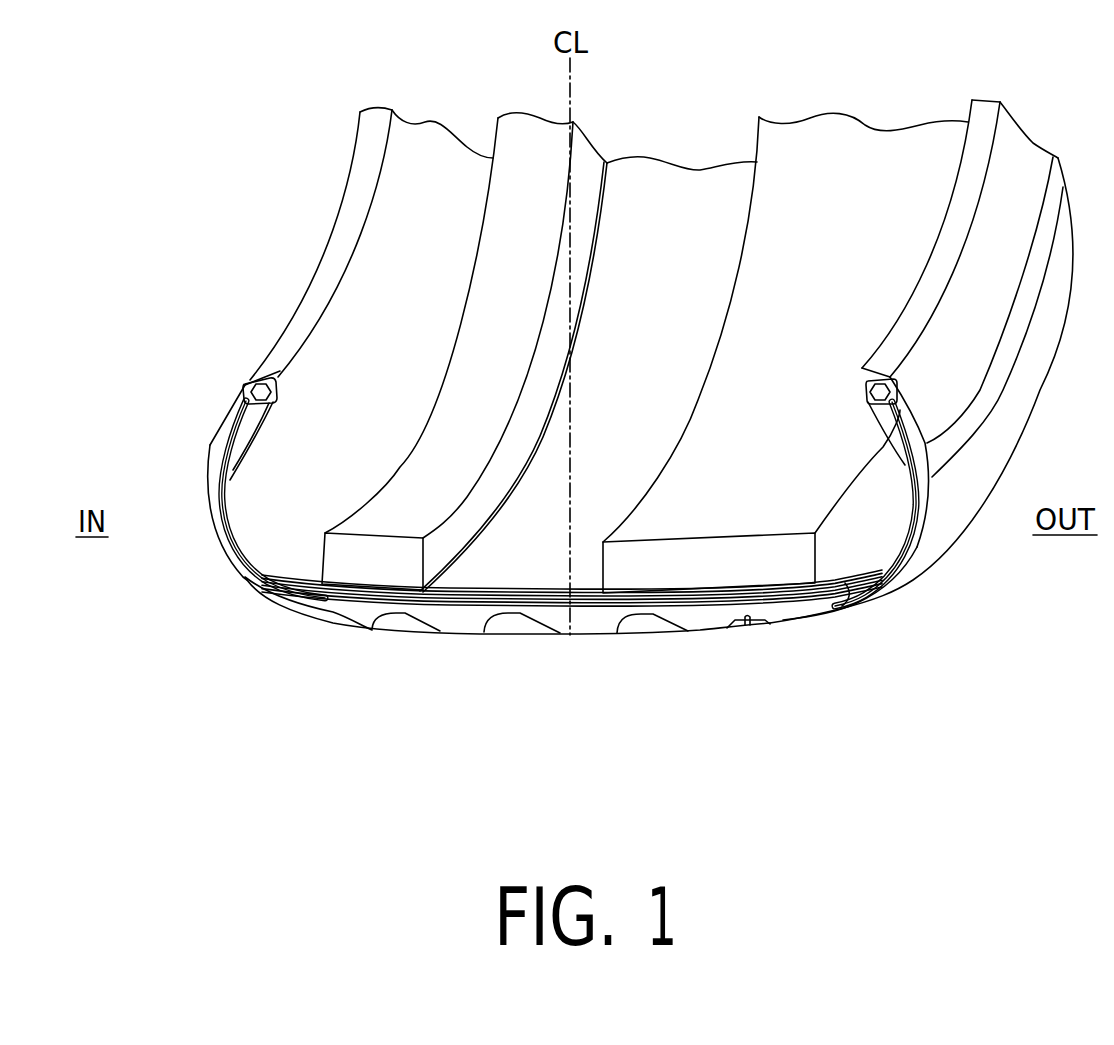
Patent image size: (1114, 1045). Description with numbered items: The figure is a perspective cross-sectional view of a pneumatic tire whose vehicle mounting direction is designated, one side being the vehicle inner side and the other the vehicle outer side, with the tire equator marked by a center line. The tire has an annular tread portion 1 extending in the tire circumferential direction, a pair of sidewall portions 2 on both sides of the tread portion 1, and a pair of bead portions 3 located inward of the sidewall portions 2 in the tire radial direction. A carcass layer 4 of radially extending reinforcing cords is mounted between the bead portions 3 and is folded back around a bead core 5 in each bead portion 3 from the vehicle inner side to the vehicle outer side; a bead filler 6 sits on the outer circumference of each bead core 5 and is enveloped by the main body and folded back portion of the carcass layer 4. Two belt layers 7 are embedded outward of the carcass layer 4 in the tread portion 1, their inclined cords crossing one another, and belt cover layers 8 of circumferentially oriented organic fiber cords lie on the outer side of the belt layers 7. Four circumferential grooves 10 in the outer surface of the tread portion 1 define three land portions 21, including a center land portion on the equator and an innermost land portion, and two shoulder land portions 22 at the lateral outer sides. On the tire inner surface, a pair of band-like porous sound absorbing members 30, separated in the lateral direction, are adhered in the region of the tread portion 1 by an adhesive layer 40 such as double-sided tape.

The tread portion 1 is at (540, 722).
The sidewall portion 2 is at (186, 504).
The bead portion 3 is at (231, 386).
The carcass layer 4 is at (226, 507).
The bead core 5 is at (265, 392).
The bead filler 6 is at (243, 432).
The belt layer 7 is at (315, 586).
The belt cover layer 8 is at (817, 605).
The circumferential groove 10 is at (397, 620).
The land portion 21 is at (447, 632).
The shoulder land portion 22 is at (303, 618).
The sound absorbing member 30 is at (510, 140).
The adhesive layer 40 is at (450, 578).